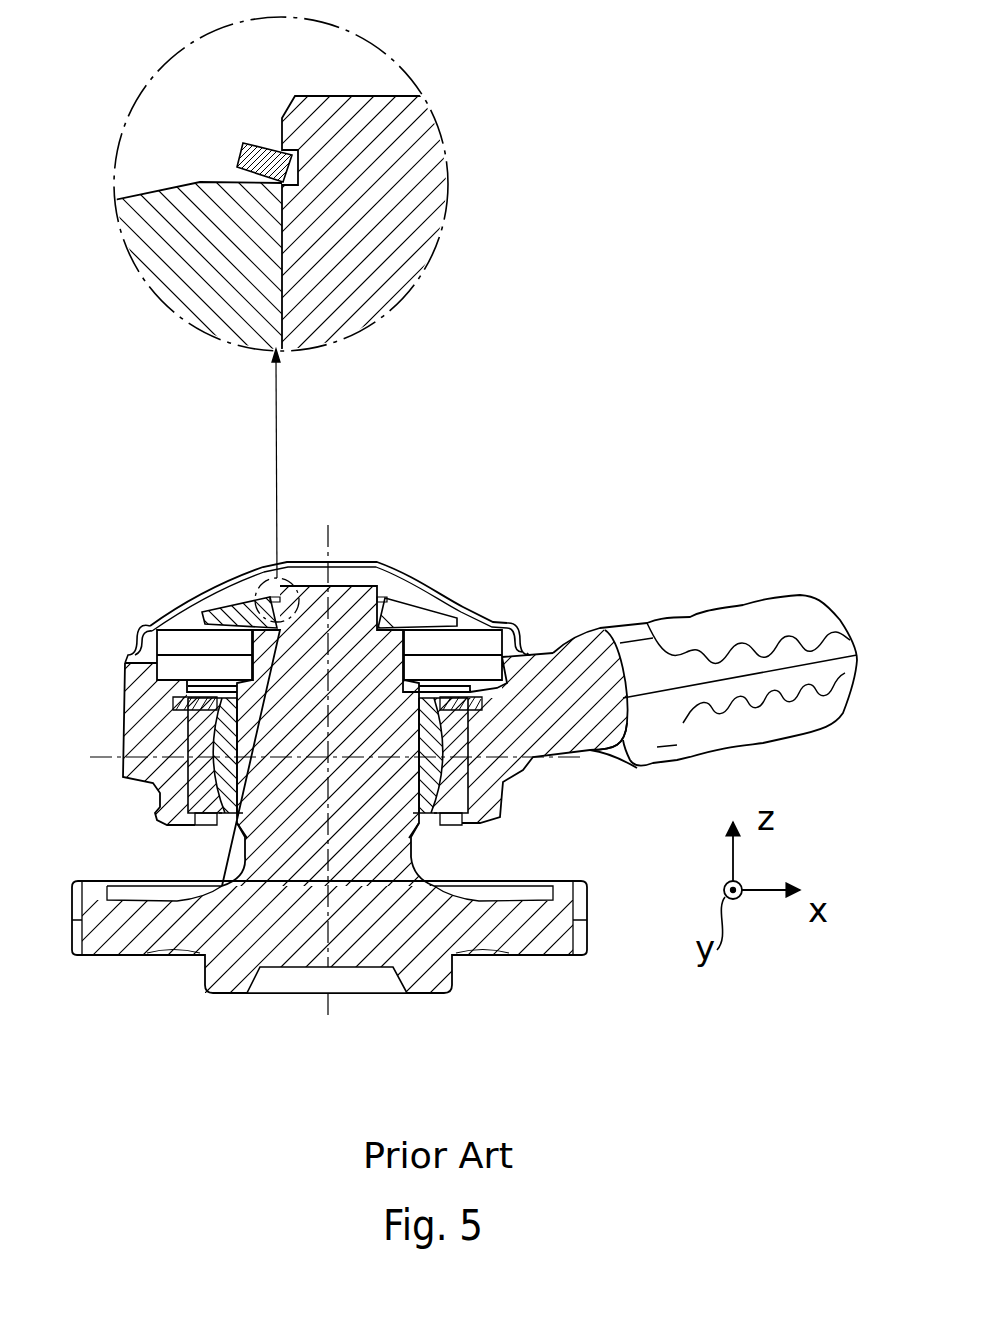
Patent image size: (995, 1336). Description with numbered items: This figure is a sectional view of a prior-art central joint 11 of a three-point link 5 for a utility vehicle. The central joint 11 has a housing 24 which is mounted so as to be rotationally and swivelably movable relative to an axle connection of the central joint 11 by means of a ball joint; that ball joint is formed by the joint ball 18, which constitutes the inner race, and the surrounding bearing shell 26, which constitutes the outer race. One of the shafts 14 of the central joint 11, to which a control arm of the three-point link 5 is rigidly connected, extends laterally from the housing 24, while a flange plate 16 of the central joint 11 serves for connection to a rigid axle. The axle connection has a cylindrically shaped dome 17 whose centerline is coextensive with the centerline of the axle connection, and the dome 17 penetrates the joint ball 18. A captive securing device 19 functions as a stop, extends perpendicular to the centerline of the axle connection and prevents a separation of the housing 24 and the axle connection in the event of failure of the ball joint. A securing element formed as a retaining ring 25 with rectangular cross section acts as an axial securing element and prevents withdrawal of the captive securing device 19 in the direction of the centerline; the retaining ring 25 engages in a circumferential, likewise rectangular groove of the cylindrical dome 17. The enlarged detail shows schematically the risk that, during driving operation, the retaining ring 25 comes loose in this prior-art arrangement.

The three-point link 5 is at (640, 570).
The central joint 11 is at (510, 596).
The shaft 14 is at (760, 617).
The flange plate 16 is at (108, 937).
The dome 17 is at (263, 692).
The joint ball 18 is at (223, 720).
The captive securing device 19 is at (210, 612).
The housing 24 is at (140, 773).
The retaining ring 25 is at (243, 156).
The bearing shell 26 is at (200, 745).